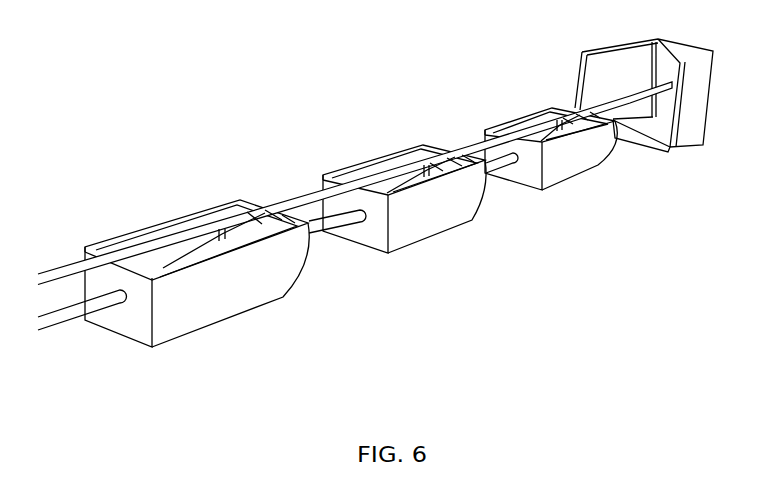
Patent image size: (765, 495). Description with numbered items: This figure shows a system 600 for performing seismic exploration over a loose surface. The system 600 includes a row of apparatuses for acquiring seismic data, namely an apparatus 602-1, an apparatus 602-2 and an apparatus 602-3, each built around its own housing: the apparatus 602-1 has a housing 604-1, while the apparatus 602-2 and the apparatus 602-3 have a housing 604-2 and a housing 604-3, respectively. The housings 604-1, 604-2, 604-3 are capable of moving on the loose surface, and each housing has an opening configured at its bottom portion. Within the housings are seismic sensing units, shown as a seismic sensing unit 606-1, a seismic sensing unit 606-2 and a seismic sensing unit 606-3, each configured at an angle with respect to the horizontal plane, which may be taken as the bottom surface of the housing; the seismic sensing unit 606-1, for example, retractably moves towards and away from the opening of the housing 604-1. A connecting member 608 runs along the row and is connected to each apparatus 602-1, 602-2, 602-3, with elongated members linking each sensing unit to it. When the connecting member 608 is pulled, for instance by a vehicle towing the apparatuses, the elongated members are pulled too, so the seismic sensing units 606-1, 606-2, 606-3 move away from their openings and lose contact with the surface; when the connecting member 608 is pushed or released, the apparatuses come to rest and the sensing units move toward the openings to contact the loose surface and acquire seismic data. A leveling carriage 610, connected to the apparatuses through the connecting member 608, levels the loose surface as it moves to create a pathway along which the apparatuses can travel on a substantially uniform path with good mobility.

The system 600 is at (393, 83).
The apparatus 602-1 is at (181, 218).
The apparatus 602-2 is at (393, 153).
The apparatus 602-3 is at (535, 108).
The housing 604-1 is at (255, 298).
The housing 604-2 is at (460, 218).
The housing 604-3 is at (588, 167).
The seismic sensing unit 606-1 is at (222, 236).
The seismic sensing unit 606-2 is at (423, 176).
The seismic sensing unit 606-3 is at (561, 126).
The connecting member 608 is at (294, 197).
The leveling carriage 610 is at (688, 127).